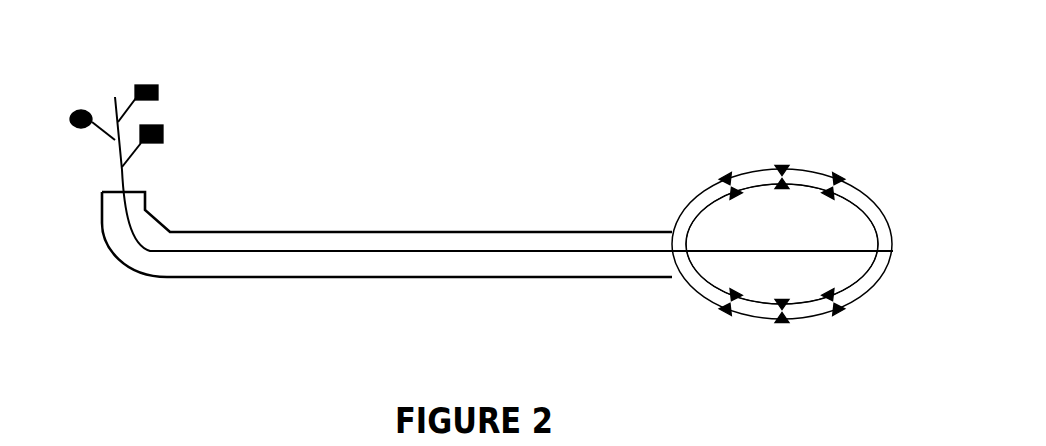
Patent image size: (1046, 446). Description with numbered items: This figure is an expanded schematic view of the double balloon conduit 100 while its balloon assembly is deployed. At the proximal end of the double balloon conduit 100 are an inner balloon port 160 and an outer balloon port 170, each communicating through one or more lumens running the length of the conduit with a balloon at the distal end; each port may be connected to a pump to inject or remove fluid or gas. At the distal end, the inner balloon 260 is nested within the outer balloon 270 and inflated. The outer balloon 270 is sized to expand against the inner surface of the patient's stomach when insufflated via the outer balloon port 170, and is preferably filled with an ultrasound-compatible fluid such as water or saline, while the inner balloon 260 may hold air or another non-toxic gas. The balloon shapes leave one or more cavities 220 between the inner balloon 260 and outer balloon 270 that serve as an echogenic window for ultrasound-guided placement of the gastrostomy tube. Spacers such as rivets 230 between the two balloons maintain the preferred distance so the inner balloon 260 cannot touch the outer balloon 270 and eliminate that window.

The double balloon conduit 100 is at (426, 201).
The inner balloon port 160 is at (156, 85).
The outer balloon port 170 is at (163, 128).
The cavity 220 is at (724, 181).
The rivets 230 is at (847, 307).
The inner balloon 260 is at (720, 268).
The outer balloon 270 is at (885, 218).